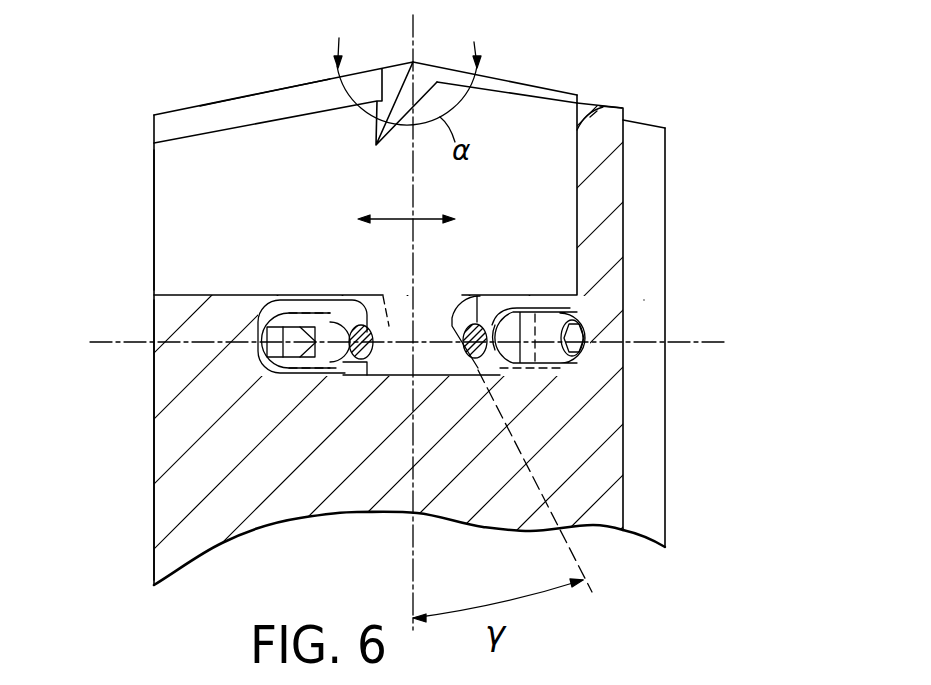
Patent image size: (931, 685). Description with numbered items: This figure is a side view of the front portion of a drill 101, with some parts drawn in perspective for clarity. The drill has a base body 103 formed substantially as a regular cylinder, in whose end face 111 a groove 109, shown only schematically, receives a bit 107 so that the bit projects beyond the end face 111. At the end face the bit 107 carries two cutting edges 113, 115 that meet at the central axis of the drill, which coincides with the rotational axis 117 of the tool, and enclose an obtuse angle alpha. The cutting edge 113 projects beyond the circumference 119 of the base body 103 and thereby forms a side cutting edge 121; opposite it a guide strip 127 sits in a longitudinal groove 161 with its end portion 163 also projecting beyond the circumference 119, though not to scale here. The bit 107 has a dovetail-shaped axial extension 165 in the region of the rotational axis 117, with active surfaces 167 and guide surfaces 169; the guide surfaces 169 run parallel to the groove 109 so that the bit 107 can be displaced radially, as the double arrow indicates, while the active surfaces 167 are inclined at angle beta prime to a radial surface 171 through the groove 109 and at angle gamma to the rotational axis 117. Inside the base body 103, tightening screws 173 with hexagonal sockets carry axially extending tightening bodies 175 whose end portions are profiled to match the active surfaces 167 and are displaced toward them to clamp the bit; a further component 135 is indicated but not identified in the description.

The drill 101 is at (680, 53).
The base body 103 is at (597, 483).
The bit 107 is at (212, 147).
The groove 109 is at (593, 110).
The end face 111 is at (615, 107).
The cutting edge 113 is at (274, 88).
The cutting edge 115 is at (508, 80).
The rotational axis 117 is at (416, 30).
The circumference 119 is at (155, 453).
The side cutting edge 121 is at (153, 210).
The guide strip 127 is at (648, 205).
The adjusting screw head 135 is at (332, 363).
The longitudinal groove 161 is at (623, 153).
The end portion 163 is at (667, 276).
The axial extension 165 is at (396, 352).
The active surfaces 167 is at (505, 370).
The guide surfaces 169 is at (447, 356).
The radial surface 171 is at (705, 340).
The tightening screws 173 is at (417, 378).
The tightening bodies 175 is at (520, 292).